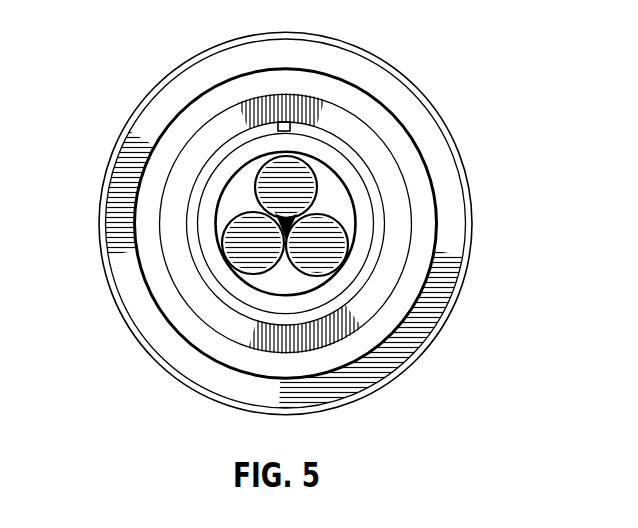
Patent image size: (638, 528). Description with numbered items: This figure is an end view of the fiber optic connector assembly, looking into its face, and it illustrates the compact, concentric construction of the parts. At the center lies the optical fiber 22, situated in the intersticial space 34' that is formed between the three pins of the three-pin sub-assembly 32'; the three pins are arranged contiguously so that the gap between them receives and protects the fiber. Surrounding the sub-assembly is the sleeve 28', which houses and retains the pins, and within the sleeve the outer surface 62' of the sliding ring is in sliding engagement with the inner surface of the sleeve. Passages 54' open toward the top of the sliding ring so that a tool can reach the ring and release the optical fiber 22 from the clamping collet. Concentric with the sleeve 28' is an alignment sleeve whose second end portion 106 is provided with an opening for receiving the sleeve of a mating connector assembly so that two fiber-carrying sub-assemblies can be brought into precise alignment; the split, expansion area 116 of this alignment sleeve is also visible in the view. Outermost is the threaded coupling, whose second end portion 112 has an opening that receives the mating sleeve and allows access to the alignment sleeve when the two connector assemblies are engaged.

The optical fiber 22 is at (317, 198).
The sleeve 28' is at (306, 238).
The three-pin sub-assembly 32' is at (349, 265).
The intersticial space 34' is at (363, 223).
The passages 54' is at (341, 318).
The outer surface of sliding ring 62' is at (254, 223).
The second end portion of alignment sleeve 106 is at (382, 251).
The second end portion of threaded coupling 112 is at (164, 189).
The split expansion area 116 is at (290, 122).